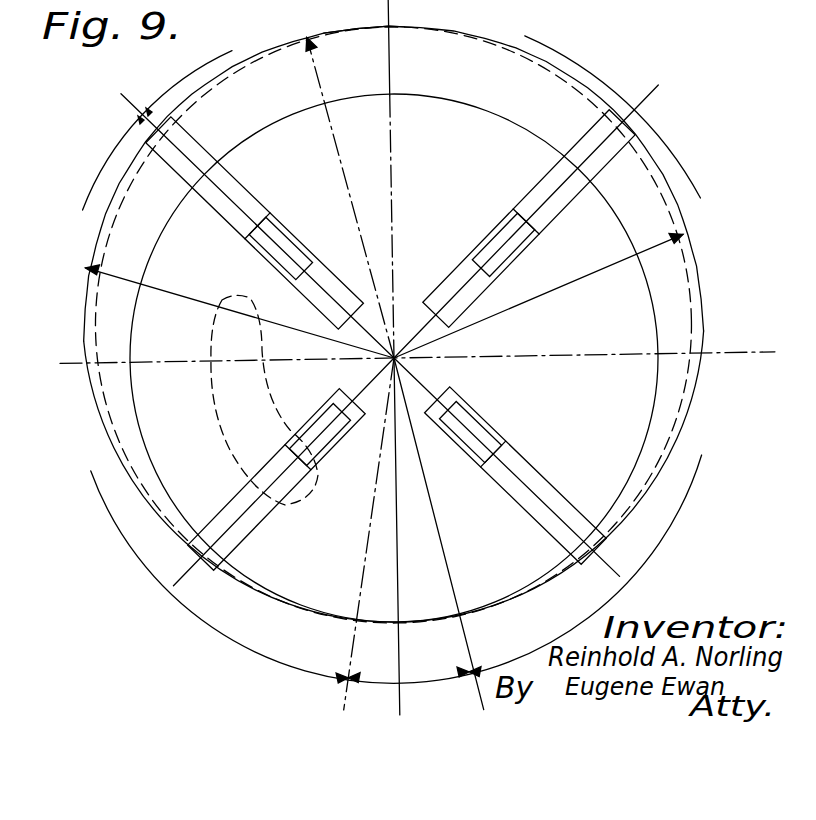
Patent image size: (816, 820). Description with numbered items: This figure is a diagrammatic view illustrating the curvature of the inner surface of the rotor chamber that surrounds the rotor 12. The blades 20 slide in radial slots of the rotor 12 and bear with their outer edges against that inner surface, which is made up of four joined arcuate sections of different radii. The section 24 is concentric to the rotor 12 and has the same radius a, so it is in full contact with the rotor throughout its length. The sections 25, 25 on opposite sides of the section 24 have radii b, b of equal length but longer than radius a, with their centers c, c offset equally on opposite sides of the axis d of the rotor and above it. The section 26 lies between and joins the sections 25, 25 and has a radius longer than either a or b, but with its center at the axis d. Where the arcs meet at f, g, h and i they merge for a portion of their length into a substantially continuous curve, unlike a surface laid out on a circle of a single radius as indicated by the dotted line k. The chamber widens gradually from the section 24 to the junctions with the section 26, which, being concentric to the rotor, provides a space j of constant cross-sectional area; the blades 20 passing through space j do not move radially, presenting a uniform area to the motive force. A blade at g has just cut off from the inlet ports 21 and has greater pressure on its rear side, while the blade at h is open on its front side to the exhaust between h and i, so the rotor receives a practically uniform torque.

The rotor 12 is at (492, 132).
The blades 20 is at (245, 197).
The inlet ports 21 is at (230, 412).
The section 24 is at (380, 622).
The sections 25 is at (727, 314).
The section 26 is at (352, 31).
The radius a is at (400, 520).
The radii b is at (174, 292).
The centers c is at (377, 328).
The axis d is at (465, 383).
The line e is at (353, 193).
The junction point f is at (345, 620).
The junction point g is at (160, 130).
The junction point h is at (622, 110).
The junction point i is at (450, 620).
The space j is at (414, 61).
The dotted line k is at (116, 220).